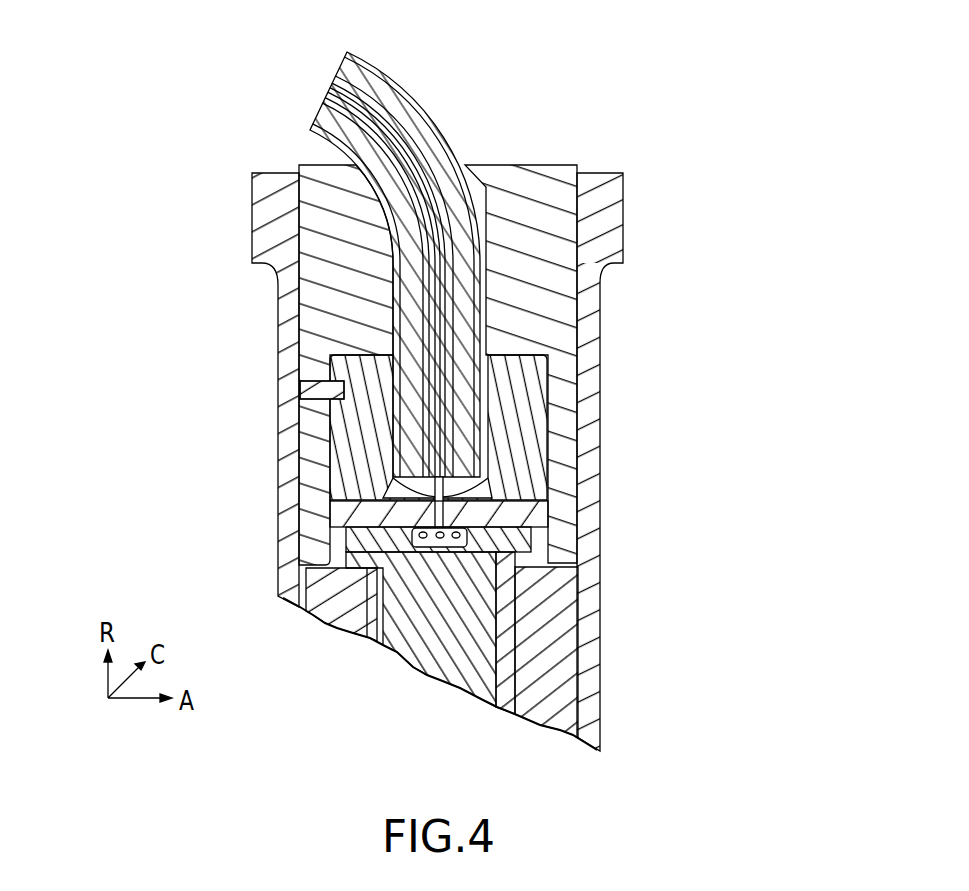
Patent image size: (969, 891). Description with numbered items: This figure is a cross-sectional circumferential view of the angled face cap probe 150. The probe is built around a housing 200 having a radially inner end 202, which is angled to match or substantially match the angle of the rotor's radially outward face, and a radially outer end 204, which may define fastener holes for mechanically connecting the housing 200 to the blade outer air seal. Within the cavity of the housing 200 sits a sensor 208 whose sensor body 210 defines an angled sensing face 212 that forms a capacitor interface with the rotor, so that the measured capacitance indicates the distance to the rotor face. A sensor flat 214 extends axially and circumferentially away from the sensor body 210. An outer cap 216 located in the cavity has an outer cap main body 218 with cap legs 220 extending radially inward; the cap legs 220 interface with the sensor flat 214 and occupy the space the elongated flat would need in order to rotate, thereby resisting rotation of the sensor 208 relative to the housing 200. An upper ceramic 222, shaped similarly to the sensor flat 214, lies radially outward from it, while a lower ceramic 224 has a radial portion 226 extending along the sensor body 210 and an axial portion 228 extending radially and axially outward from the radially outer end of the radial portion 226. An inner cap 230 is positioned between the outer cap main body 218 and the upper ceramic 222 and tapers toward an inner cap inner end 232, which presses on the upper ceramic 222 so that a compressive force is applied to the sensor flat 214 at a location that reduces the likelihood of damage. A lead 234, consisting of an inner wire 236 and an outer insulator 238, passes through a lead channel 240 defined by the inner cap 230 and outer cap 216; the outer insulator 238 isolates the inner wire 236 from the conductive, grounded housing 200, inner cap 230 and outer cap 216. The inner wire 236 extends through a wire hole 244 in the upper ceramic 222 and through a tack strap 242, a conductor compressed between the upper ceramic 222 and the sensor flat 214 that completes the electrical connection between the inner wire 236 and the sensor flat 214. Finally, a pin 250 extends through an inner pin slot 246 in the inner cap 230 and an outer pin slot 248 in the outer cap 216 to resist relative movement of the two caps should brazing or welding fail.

The angled face cap probe 150 is at (687, 319).
The housing 200 is at (617, 227).
The radially inner end 202 is at (555, 726).
The radially outer end 204 is at (597, 175).
The sensor 208 is at (386, 658).
The sensor body 210 is at (472, 607).
The sensing face 212 is at (418, 634).
The sensor flat 214 is at (530, 540).
The outer cap 216 is at (525, 182).
The outer cap main body 218 is at (320, 238).
The cap legs 220 is at (563, 448).
The upper ceramic 222 is at (342, 513).
The lower ceramic 224 is at (380, 607).
The radial portion 226 is at (505, 658).
The axial portion 228 is at (535, 565).
The inner cap 230 is at (530, 390).
The inner cap inner end 232 is at (518, 504).
The lead 234 is at (373, 68).
The inner wire 236 is at (328, 97).
The outer insulator 238 is at (308, 135).
The lead channel 240 is at (393, 413).
The tack strap 242 is at (290, 603).
The wire hole 244 is at (450, 518).
The inner pin slot 246 is at (337, 373).
The outer pin slot 248 is at (345, 450).
The pin 250 is at (307, 388).